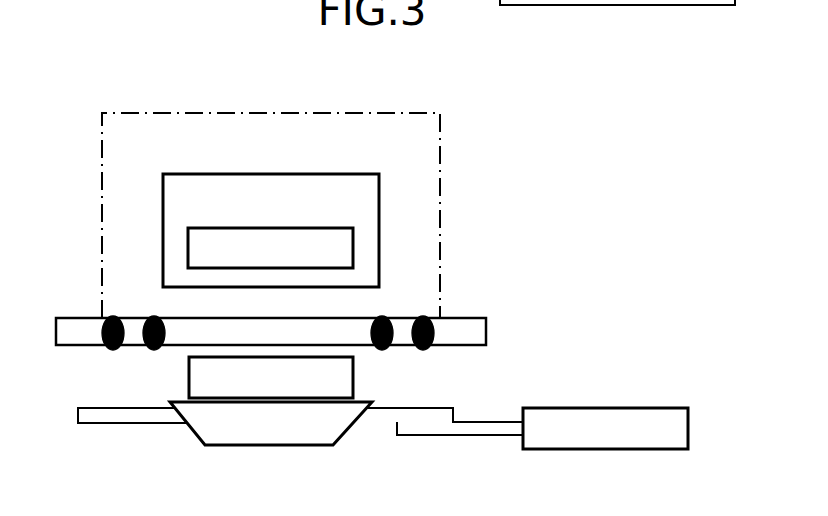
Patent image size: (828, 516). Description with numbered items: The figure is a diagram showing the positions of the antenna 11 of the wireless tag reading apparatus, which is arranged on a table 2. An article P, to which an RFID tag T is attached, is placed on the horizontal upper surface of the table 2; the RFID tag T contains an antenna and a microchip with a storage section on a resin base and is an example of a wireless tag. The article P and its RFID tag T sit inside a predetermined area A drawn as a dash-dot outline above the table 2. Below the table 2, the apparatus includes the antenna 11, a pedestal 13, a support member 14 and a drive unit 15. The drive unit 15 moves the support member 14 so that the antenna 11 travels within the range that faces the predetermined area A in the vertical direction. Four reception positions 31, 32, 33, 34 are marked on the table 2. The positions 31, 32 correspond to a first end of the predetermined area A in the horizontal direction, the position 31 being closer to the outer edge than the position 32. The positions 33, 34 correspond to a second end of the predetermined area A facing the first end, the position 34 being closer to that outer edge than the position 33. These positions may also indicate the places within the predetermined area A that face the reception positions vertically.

The table 2 is at (473, 333).
The antenna 11 is at (353, 378).
The pedestal 13 is at (252, 445).
The support member 14 is at (438, 408).
The drive unit 15 is at (608, 408).
The position 31 is at (107, 347).
The position 32 is at (150, 347).
The position 33 is at (386, 318).
The position 34 is at (432, 325).
The predetermined area A is at (305, 113).
The article P is at (347, 174).
The RFID tag T is at (343, 228).